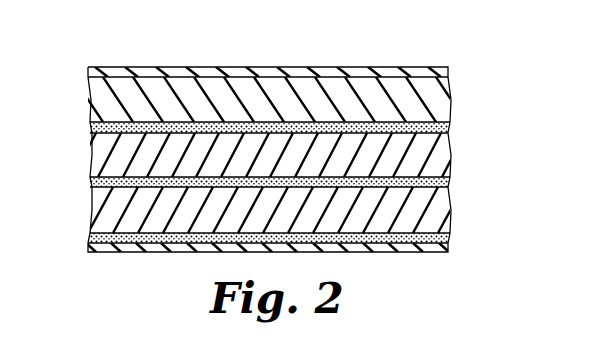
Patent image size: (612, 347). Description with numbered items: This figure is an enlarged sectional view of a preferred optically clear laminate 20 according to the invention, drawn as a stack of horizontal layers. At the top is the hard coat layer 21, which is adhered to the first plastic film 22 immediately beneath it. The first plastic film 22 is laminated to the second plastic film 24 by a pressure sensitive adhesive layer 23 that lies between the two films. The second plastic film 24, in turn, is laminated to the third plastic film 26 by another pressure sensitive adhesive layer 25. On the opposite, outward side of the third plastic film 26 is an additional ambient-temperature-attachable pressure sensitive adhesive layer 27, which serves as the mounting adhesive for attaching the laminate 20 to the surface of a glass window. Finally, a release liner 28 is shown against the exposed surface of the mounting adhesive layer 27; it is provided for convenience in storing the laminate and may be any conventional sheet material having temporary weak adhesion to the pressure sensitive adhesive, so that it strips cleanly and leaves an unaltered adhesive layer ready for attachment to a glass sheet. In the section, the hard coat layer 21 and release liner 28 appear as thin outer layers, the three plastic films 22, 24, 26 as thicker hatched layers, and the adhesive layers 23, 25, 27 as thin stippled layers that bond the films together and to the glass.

The laminate 20 is at (239, 159).
The hard coat layer 21 is at (408, 70).
The first plastic film 22 is at (450, 90).
The pressure sensitive adhesive layer 23 is at (447, 127).
The second plastic film 24 is at (448, 158).
The pressure sensitive adhesive layer 25 is at (448, 180).
The third plastic film 26 is at (450, 218).
The ambient-temperature-attachable pressure sensitive adhesive layer 27 is at (450, 237).
The release liner 28 is at (436, 252).